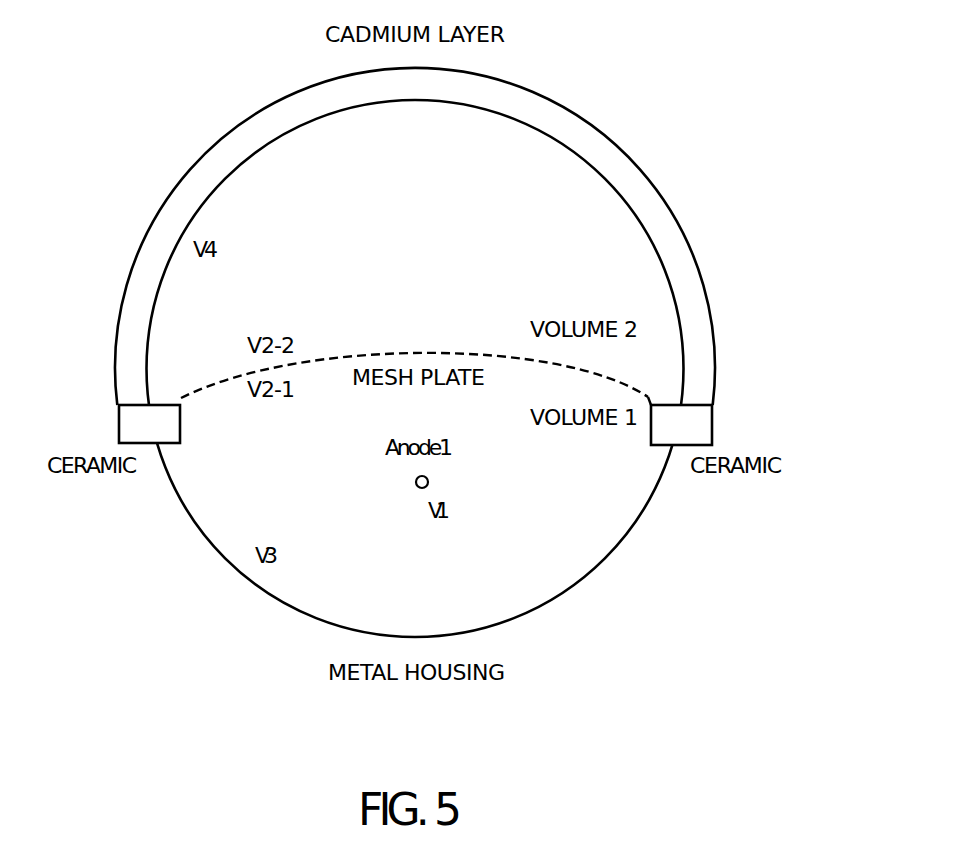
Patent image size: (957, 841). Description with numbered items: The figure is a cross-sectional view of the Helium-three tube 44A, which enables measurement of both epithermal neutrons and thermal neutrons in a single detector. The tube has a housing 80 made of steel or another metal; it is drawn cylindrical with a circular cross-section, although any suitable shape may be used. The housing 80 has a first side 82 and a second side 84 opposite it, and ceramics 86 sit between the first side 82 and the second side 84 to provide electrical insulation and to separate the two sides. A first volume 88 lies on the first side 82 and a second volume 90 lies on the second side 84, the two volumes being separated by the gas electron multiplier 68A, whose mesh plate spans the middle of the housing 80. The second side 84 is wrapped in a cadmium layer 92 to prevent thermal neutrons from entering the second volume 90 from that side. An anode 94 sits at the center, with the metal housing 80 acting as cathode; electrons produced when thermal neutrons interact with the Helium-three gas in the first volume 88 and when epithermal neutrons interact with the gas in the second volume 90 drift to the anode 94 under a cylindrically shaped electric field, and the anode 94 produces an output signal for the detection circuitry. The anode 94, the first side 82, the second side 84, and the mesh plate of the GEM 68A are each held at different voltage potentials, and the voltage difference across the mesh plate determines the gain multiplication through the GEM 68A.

The Helium-3 tube 44A is at (182, 75).
The second side 84 is at (618, 88).
The cadmium layer 92 is at (620, 143).
The second volume 90 is at (612, 238).
The gas electron multiplier (GEM) 68A is at (617, 373).
The ceramics 86 is at (118, 424).
The housing 80 is at (240, 573).
The first volume 88 is at (560, 572).
The first side 82 is at (560, 625).
The anode 94 is at (412, 490).